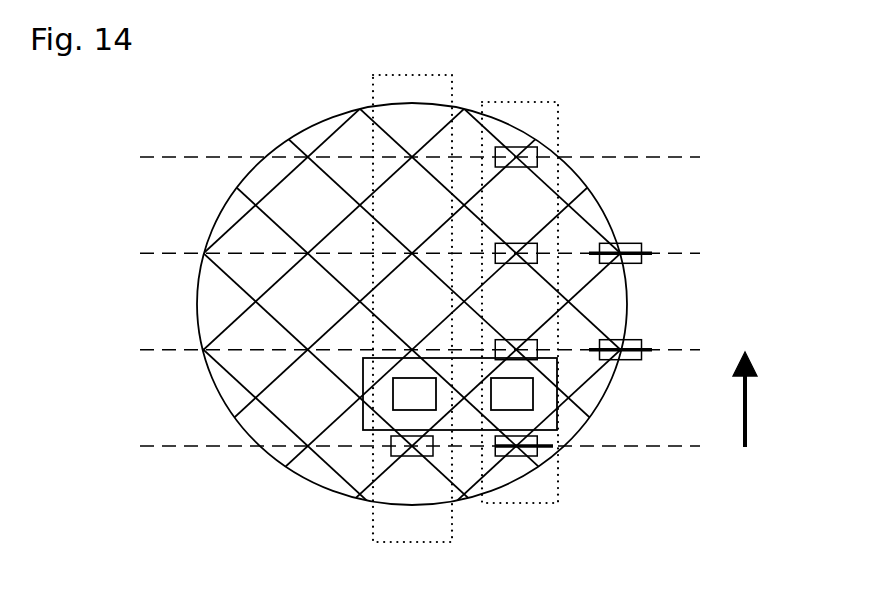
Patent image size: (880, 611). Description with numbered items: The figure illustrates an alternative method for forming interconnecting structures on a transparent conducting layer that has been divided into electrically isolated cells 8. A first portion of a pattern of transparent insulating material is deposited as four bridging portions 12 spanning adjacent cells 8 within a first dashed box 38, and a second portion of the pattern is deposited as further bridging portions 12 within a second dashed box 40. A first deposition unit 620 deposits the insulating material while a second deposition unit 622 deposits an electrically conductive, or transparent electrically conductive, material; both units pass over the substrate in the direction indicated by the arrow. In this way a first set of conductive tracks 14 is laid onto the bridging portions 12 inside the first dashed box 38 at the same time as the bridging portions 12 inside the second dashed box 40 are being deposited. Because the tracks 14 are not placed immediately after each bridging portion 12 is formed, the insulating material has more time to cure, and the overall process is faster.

The electrically isolated cells 8 is at (362, 135).
The second dashed box 40 is at (435, 78).
The first dashed box 38 is at (558, 112).
The bridging portions 12 is at (540, 162).
The conductive tracks 14 is at (638, 358).
The first deposition unit 620 is at (405, 402).
The second deposition unit 622 is at (502, 402).